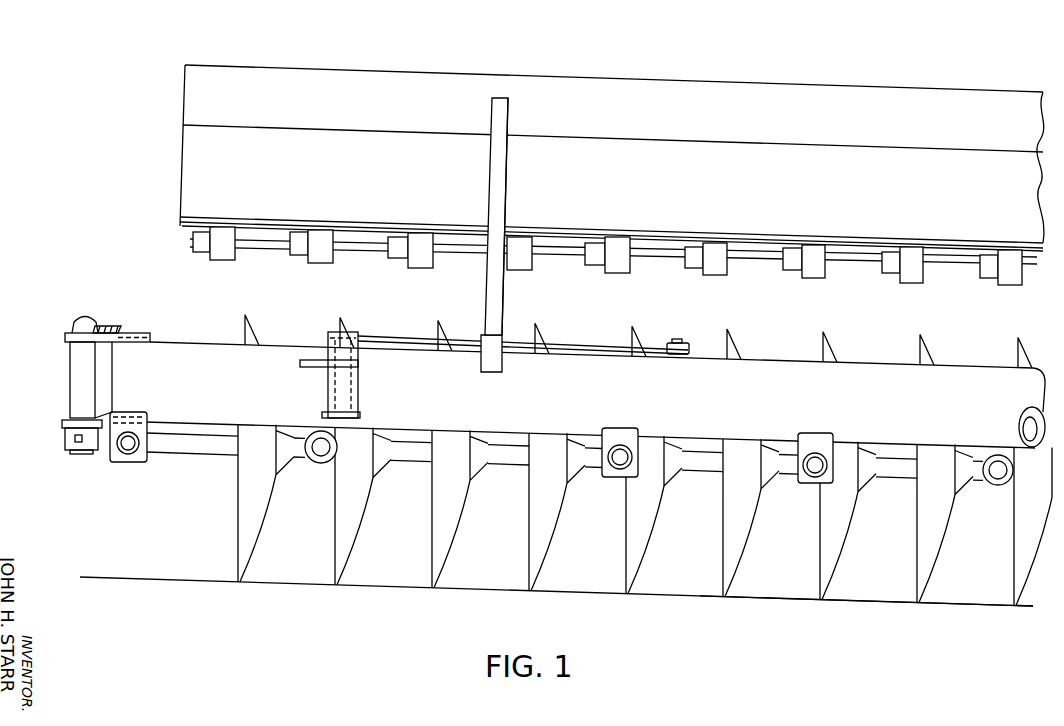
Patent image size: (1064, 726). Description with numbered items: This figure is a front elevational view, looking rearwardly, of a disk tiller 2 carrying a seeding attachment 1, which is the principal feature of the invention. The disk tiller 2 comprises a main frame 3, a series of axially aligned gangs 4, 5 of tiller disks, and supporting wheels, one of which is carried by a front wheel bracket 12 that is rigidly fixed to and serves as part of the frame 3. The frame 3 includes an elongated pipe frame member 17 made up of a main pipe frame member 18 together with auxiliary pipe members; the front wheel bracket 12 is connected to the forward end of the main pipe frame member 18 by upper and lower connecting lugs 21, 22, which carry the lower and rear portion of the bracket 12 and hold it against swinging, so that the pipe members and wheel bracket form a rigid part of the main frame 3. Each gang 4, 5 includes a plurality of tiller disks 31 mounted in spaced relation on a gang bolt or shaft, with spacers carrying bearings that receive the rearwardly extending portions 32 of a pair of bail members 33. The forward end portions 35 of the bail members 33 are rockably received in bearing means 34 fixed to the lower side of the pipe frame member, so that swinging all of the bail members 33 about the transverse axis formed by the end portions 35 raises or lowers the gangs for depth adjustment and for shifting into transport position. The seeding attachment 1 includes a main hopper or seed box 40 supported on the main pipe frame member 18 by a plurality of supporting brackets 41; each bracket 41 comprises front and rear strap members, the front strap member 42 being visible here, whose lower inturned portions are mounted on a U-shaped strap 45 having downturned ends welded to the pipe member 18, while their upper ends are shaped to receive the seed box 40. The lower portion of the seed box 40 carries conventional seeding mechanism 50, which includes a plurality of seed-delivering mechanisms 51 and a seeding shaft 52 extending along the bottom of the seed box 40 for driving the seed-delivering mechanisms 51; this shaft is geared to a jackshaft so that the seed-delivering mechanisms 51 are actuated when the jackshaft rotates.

The seeding attachment 1 is at (649, 43).
The disk tiller 2 is at (168, 318).
The main frame 3 is at (866, 359).
The disk gang 4 is at (423, 584).
The disk gang 5 is at (909, 608).
The front wheel bracket 12 is at (78, 316).
The elongated pipe frame member 17 is at (705, 350).
The main pipe frame member 18 is at (789, 366).
The upper connecting lug 21 is at (65, 335).
The lower connecting lug 22 is at (62, 428).
The tiller disks 31 is at (628, 550).
The rearwardly extending portions 32 is at (320, 438).
The bail members 33 is at (208, 453).
The bearing means 34 is at (139, 463).
The forward end portions 35 is at (150, 428).
The main hopper or seed box 40 is at (326, 68).
The supporting brackets 41 is at (505, 293).
The front strap member 42 is at (486, 272).
The strap 45 is at (480, 359).
The seeding mechanism 50 is at (758, 268).
The seed-delivering mechanisms 51 is at (710, 248).
The seeding shaft 52 is at (560, 250).